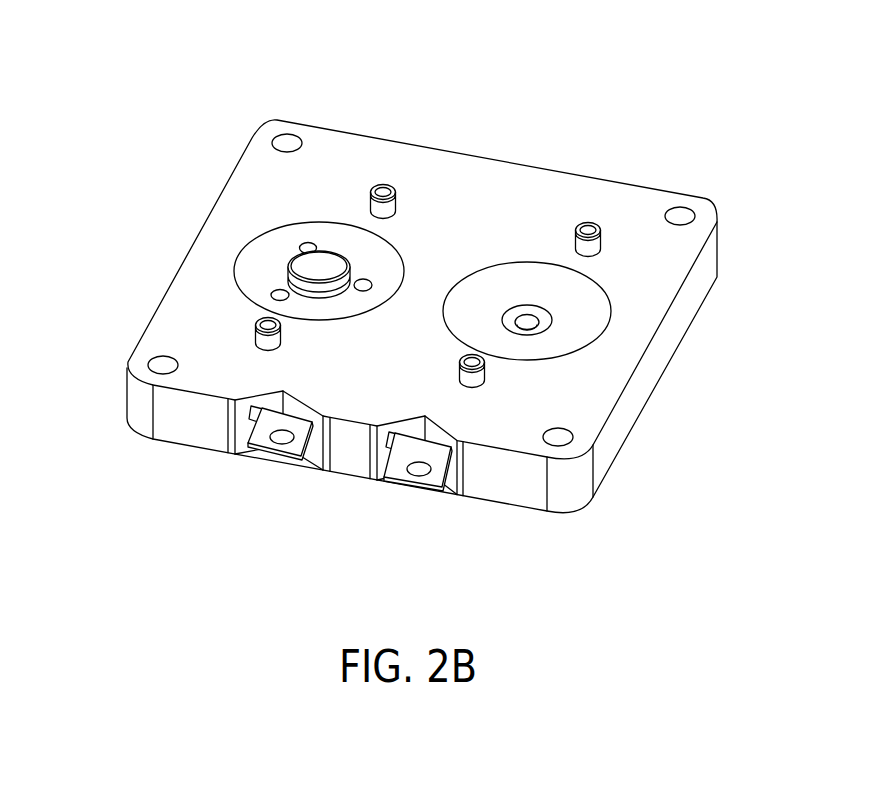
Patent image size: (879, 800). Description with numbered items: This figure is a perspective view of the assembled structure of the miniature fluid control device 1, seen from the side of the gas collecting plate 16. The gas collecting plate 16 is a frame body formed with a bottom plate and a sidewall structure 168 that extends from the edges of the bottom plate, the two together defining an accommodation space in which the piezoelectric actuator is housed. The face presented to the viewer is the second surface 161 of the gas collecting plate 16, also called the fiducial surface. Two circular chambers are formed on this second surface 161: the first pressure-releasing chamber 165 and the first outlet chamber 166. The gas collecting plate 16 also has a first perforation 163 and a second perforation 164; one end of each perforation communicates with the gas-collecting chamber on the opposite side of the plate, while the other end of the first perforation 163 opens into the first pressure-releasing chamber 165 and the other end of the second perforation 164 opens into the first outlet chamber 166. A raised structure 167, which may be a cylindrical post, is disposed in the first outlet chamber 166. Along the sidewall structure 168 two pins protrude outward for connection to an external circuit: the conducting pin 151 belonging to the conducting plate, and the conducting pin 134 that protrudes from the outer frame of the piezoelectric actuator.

The miniature fluid control device 1 is at (728, 35).
The gas collecting plate 16 is at (557, 192).
The second surface 161 is at (353, 150).
The first perforation 163 is at (528, 324).
The second perforation 164 is at (301, 244).
The first pressure-releasing chamber 165 is at (587, 318).
The first outlet chamber 166 is at (260, 261).
The raised structure 167 is at (287, 271).
The sidewall structure 168 is at (172, 398).
The conducting pin 151 is at (260, 437).
The conducting pin 134 is at (437, 480).